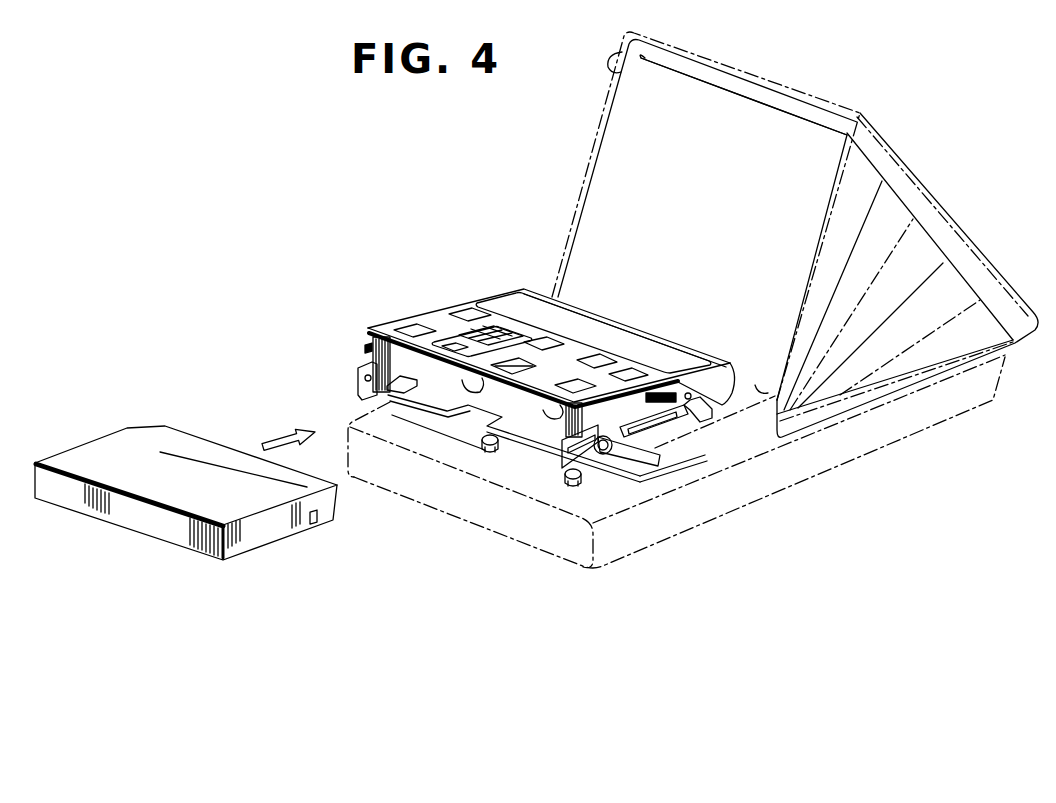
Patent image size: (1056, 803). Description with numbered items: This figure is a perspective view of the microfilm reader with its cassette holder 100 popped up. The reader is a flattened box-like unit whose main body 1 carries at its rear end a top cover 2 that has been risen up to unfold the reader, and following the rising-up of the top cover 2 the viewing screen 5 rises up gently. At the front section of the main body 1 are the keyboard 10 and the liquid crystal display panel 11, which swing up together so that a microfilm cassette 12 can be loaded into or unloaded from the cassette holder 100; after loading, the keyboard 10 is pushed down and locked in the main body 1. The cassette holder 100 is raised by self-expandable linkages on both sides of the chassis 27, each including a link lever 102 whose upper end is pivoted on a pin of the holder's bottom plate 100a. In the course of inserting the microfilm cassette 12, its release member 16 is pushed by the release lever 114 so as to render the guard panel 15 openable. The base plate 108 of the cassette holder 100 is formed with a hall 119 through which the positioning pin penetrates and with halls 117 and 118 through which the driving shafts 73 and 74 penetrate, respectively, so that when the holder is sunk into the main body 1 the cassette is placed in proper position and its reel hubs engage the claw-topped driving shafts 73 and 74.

The main body 1 is at (813, 450).
The top cover 2 is at (880, 138).
The viewing screen 5 is at (612, 156).
The keyboard 10 is at (444, 316).
The liquid crystal display panel 11 is at (523, 298).
The microfilm cassette 12 is at (185, 537).
The guard panel 15 is at (210, 448).
The release member 16 is at (313, 527).
The chassis 27 is at (607, 477).
The driving shaft 73 is at (484, 452).
The driving shaft 74 is at (575, 490).
The cassette holder 100 is at (366, 347).
The holder chassis plate 100a is at (540, 440).
The link lever 102 is at (637, 457).
The bottom plate 108 is at (356, 397).
The release lever 114 is at (680, 432).
The hall 117 is at (470, 387).
The hall 118 is at (548, 415).
The hall 119 is at (394, 398).